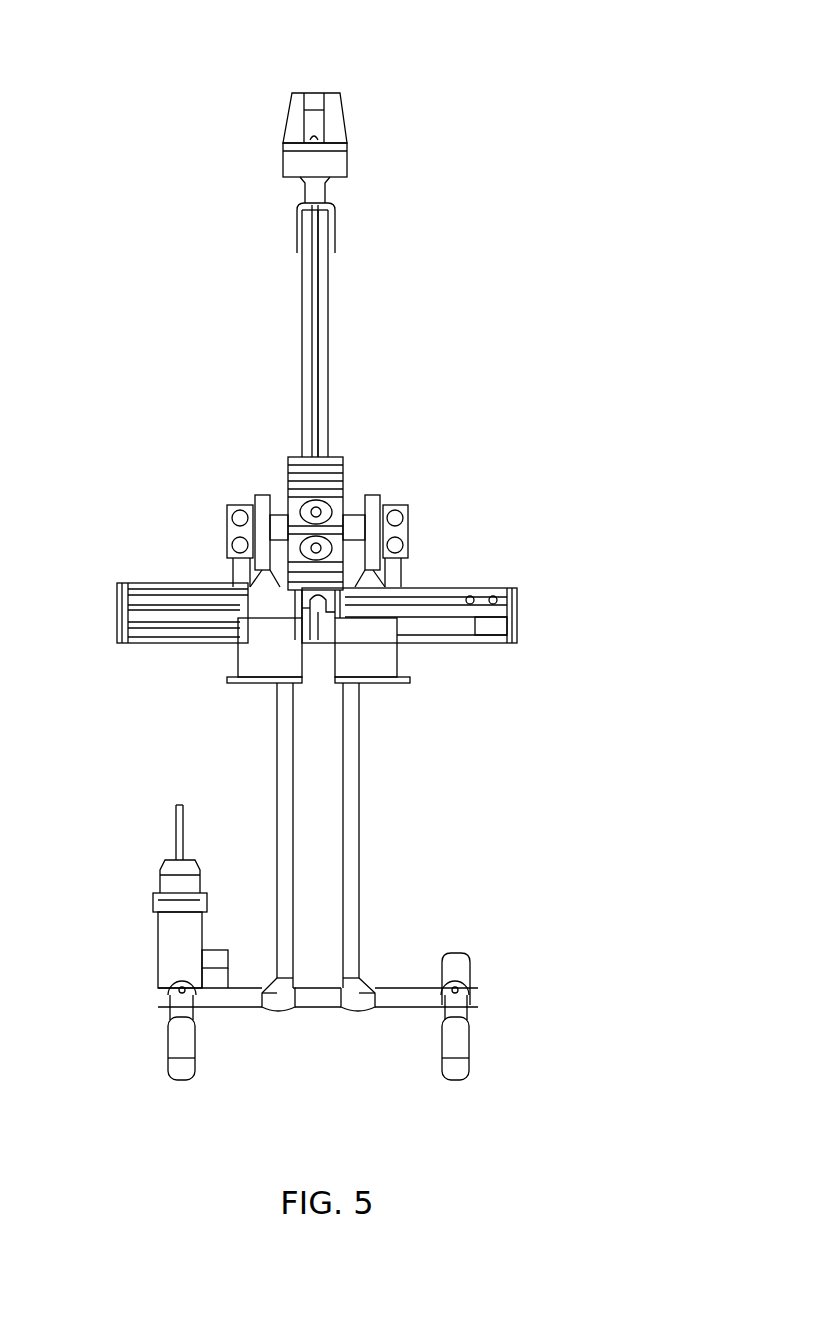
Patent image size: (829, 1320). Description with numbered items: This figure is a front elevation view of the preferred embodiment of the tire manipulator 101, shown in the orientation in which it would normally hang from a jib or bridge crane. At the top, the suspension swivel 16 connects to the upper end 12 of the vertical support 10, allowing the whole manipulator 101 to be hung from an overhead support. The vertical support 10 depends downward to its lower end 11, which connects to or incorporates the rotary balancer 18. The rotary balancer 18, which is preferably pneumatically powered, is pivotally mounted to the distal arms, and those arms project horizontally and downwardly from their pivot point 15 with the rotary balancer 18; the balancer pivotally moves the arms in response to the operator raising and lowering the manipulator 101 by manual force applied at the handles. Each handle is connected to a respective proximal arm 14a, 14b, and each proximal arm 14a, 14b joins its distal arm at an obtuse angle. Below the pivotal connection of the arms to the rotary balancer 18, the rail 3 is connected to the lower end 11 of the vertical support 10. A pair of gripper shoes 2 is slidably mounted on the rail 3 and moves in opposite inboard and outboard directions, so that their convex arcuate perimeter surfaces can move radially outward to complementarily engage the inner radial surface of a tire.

The tire manipulator 101 is at (437, 135).
The suspension swivel 16 is at (285, 131).
The vertical support 10 is at (302, 317).
The lower end 11 is at (328, 434).
The upper end 12 is at (318, 266).
The rotary balancer 18 is at (284, 520).
The pivot point 15 is at (392, 508).
The rail 3 is at (160, 590).
The gripper shoes 2 is at (375, 662).
The first proximal arm 14a is at (352, 782).
The second proximal arm 14b is at (285, 774).